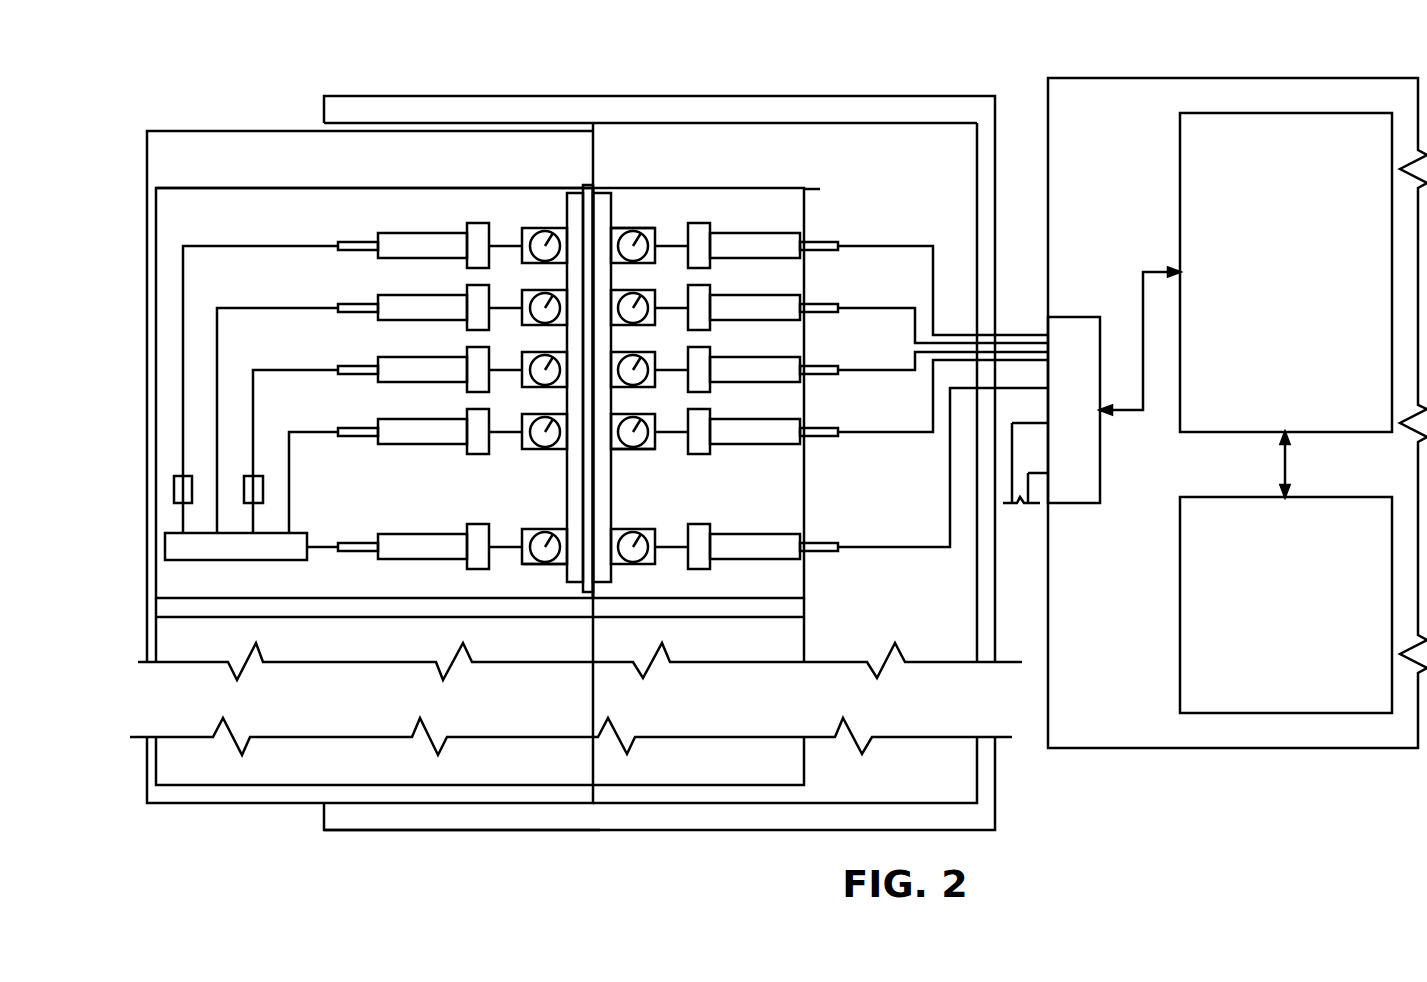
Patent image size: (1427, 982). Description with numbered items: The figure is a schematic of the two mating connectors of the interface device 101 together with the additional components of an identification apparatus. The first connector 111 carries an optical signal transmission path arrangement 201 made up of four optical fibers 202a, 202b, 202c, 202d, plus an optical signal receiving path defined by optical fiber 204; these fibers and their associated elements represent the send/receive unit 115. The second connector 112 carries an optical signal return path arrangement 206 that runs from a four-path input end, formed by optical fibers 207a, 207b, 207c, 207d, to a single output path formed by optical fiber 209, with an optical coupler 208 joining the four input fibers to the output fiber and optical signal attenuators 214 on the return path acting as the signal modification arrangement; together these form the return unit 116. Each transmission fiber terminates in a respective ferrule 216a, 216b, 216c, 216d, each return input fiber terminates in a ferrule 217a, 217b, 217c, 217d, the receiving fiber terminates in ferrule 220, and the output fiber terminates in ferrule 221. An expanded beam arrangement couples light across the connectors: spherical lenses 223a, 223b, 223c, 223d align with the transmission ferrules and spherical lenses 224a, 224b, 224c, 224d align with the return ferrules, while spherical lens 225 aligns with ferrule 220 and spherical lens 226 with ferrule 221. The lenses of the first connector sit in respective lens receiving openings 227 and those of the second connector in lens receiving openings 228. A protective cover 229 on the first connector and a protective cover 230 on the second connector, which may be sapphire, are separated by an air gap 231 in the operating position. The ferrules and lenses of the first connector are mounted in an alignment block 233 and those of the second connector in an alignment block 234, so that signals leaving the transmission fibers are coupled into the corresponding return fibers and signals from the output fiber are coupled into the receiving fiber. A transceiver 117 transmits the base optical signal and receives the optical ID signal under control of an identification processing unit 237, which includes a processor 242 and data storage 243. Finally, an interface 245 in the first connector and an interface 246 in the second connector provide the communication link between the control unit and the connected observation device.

The interface device 101 is at (597, 843).
The first connector 111 is at (720, 95).
The second connector 112 is at (237, 130).
The send/receive unit 115 is at (743, 143).
The return unit 116 is at (465, 150).
The transceiver 117 is at (1067, 318).
The optical signal transmission path arrangement 201 is at (867, 197).
The optical fiber 202a is at (862, 434).
The optical fiber 202b is at (857, 370).
The optical fiber 202c is at (862, 307).
The optical fiber 202d is at (878, 245).
The optical fiber 204 is at (888, 548).
The optical signal return path arrangement 206 is at (287, 212).
The optical fiber 207a is at (290, 452).
The optical fiber 207b is at (255, 388).
The optical fiber 207c is at (233, 310).
The optical fiber 207d is at (195, 247).
The optical coupler 208 is at (222, 563).
The optical fiber 209 is at (318, 540).
The optical signal attenuators 214 is at (250, 476).
The ferrule 216a is at (730, 445).
The ferrule 216b is at (730, 383).
The ferrule 216c is at (730, 295).
The ferrule 216d is at (730, 233).
The ferrule 217a is at (410, 418).
The ferrule 217b is at (397, 357).
The ferrule 217c is at (397, 295).
The ferrule 217d is at (410, 233).
The ferrule 220 is at (732, 532).
The ferrule 221 is at (448, 563).
The spherical lens 223a is at (650, 421).
The spherical lens 223b is at (650, 359).
The spherical lens 223c is at (650, 297).
The spherical lens 223d is at (650, 235).
The spherical lens 224a is at (537, 418).
The spherical lens 224b is at (537, 356).
The spherical lens 224c is at (537, 294).
The spherical lens 224d is at (537, 232).
The spherical lens 225 is at (638, 528).
The spherical lens 226 is at (540, 528).
The lens receiving opening 227 is at (620, 235).
The lens receiving opening 228 is at (540, 567).
The protective cover 229 is at (625, 455).
The protective cover 230 is at (563, 492).
The air gap 231 is at (590, 573).
The alignment block 233 is at (717, 188).
The alignment block 234 is at (378, 187).
The identification processing unit 237 is at (1113, 135).
The processor 242 is at (1286, 272).
The data storage 243 is at (1286, 605).
The interface 245 is at (783, 648).
The interface 246 is at (300, 767).